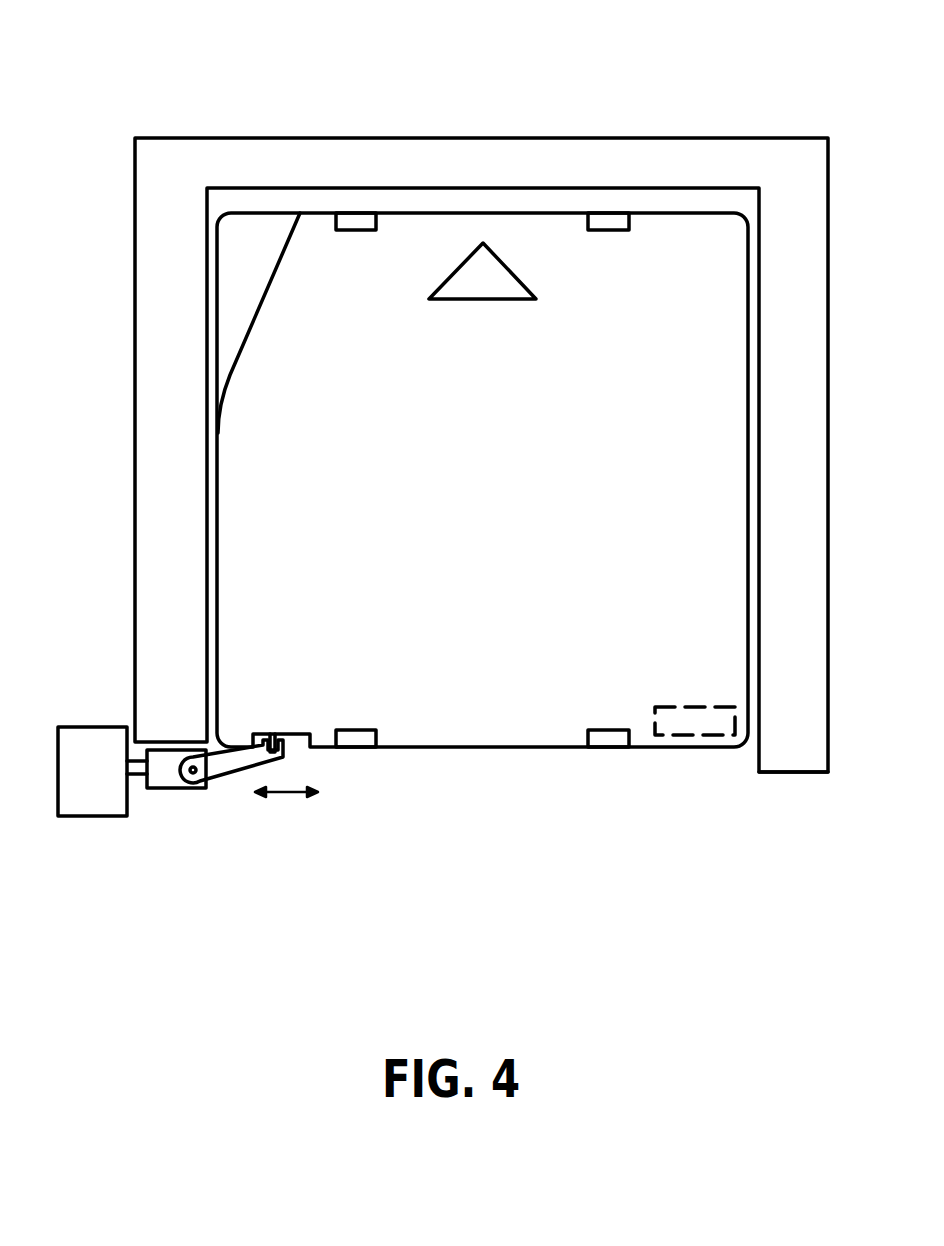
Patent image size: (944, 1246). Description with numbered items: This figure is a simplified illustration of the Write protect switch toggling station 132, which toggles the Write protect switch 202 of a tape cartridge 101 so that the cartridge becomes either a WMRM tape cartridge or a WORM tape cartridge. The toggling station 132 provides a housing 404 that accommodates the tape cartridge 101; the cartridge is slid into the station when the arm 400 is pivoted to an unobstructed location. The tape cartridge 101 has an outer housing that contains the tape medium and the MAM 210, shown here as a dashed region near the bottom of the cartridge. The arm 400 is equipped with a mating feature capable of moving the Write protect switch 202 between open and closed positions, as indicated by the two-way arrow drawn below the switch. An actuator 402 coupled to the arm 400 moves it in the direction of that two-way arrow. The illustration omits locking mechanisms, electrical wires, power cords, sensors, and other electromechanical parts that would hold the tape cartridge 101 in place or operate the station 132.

The Write protect switch toggling station 132 is at (518, 47).
The tape cartridge 101 is at (545, 482).
The Write protect switch 202 is at (282, 723).
The MAM 210 is at (697, 737).
The arm 400 is at (217, 778).
The actuator 402 is at (83, 815).
The housing 404 is at (802, 773).